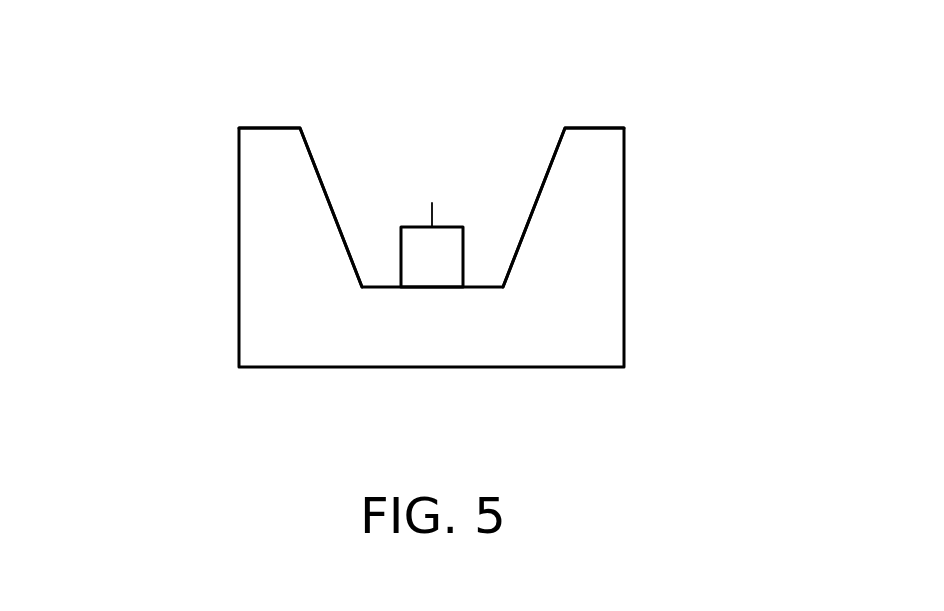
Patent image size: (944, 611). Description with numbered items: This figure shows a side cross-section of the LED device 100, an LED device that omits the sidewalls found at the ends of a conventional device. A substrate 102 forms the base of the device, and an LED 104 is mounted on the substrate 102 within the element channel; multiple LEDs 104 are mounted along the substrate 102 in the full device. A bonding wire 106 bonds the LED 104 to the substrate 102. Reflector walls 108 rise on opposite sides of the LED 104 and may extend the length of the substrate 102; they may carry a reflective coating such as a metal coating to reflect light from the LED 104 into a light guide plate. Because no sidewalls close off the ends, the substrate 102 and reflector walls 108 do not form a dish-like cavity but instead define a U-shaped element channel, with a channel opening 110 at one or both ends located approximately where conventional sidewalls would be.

The LED device 100 is at (190, 69).
The substrate 102 is at (462, 347).
The LED 104 is at (432, 277).
The bonding wire 106 is at (432, 213).
The reflector wall 108 is at (260, 208).
The channel opening 110 is at (369, 209).